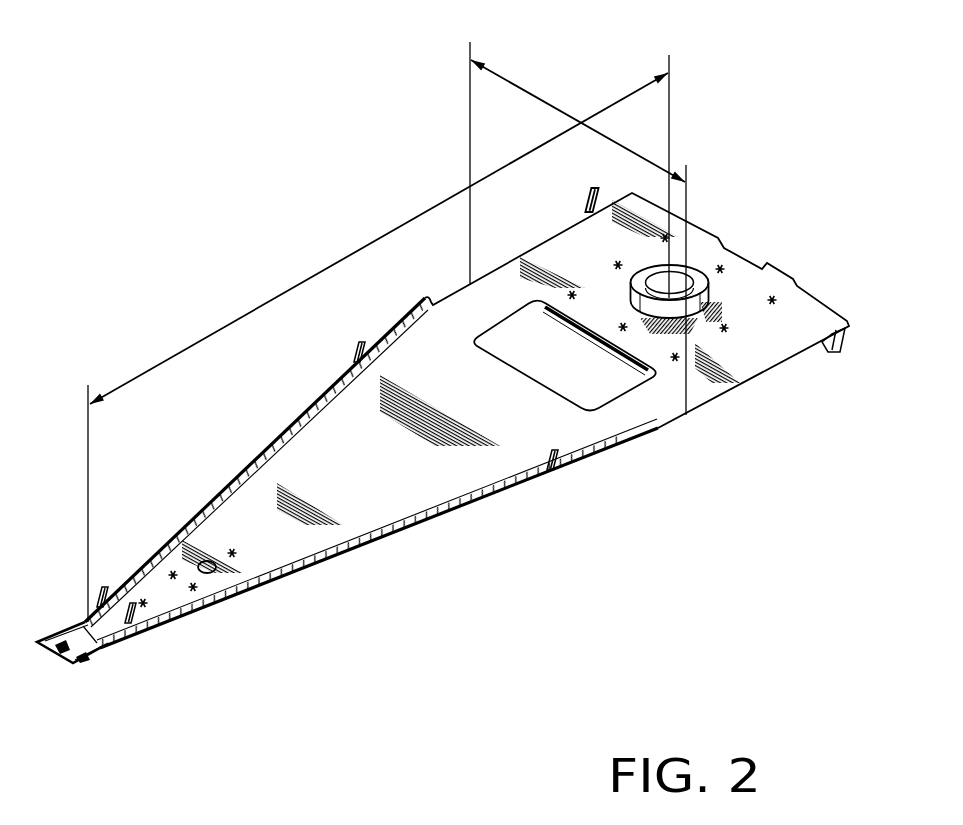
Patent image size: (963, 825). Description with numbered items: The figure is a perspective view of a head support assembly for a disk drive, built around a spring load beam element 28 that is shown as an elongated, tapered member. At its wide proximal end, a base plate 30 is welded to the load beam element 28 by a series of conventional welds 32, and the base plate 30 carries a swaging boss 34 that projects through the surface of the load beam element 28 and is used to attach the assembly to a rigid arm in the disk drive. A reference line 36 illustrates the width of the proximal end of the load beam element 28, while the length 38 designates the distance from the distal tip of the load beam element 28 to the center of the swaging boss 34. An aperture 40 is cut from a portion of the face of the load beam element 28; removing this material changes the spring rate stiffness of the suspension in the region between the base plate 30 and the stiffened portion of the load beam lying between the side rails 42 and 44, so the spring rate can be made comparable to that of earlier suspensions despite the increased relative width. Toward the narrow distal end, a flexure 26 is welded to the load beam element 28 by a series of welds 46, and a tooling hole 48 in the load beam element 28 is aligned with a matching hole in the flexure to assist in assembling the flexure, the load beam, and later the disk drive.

The flexure 26 is at (168, 630).
The spring load beam element 28 is at (352, 471).
The base plate 30 is at (595, 340).
The welds 32 is at (614, 264).
The swaging boss 34 is at (630, 290).
The reference line 36 is at (506, 78).
The length 38 is at (320, 270).
The aperture 40 is at (628, 393).
The side rail 42 is at (321, 399).
The side rail 44 is at (490, 502).
The welds 46 is at (170, 572).
The tooling hole 48 is at (222, 574).